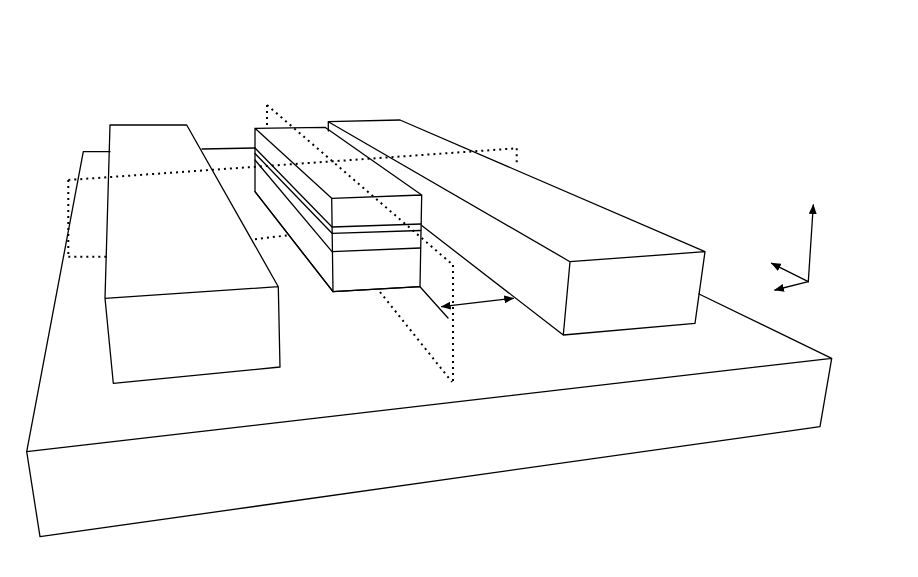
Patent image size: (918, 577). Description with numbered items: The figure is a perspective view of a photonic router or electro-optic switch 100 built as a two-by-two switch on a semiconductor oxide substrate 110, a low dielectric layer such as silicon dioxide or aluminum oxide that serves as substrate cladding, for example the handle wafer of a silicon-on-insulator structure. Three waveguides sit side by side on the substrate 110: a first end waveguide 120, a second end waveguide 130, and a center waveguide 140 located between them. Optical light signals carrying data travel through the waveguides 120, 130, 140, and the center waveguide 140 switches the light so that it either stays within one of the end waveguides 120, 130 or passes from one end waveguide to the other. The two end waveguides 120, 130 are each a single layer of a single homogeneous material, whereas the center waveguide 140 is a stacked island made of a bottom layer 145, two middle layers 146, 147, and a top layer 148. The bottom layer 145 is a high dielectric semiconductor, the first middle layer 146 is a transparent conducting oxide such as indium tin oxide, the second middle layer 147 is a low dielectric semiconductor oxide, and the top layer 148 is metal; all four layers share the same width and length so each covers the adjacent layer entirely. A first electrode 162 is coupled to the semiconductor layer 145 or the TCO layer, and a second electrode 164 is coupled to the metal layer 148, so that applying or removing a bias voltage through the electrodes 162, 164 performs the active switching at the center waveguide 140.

The electro-optic switch 100 is at (557, 112).
The semiconductor oxide substrate 110 is at (112, 510).
The first end waveguide 120 is at (108, 368).
The second end waveguide 130 is at (643, 220).
The center waveguide 140 is at (303, 123).
The bottom layer 145 is at (349, 283).
The first middle layer 146 is at (418, 235).
The second middle layer 147 is at (421, 229).
The top layer 148 is at (418, 213).
The first electrode 162 is at (315, 252).
The second electrode 164 is at (315, 198).